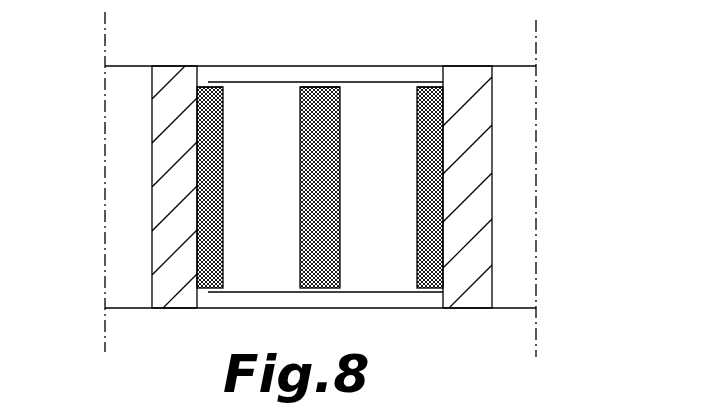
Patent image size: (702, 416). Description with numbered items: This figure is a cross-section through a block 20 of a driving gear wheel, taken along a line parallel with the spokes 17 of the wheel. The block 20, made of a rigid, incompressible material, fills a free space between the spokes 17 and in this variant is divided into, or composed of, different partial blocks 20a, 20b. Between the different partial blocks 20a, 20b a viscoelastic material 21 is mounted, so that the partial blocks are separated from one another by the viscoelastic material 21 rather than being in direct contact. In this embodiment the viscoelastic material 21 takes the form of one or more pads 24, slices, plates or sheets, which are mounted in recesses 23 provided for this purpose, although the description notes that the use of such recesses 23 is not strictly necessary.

The spokes 17 is at (133, 88).
The block 20 is at (263, 140).
The partial block 20a is at (400, 270).
The partial block 20b is at (257, 270).
The viscoelastic material 21 is at (208, 62).
The recesses 23 is at (198, 290).
The pads 24 is at (197, 98).